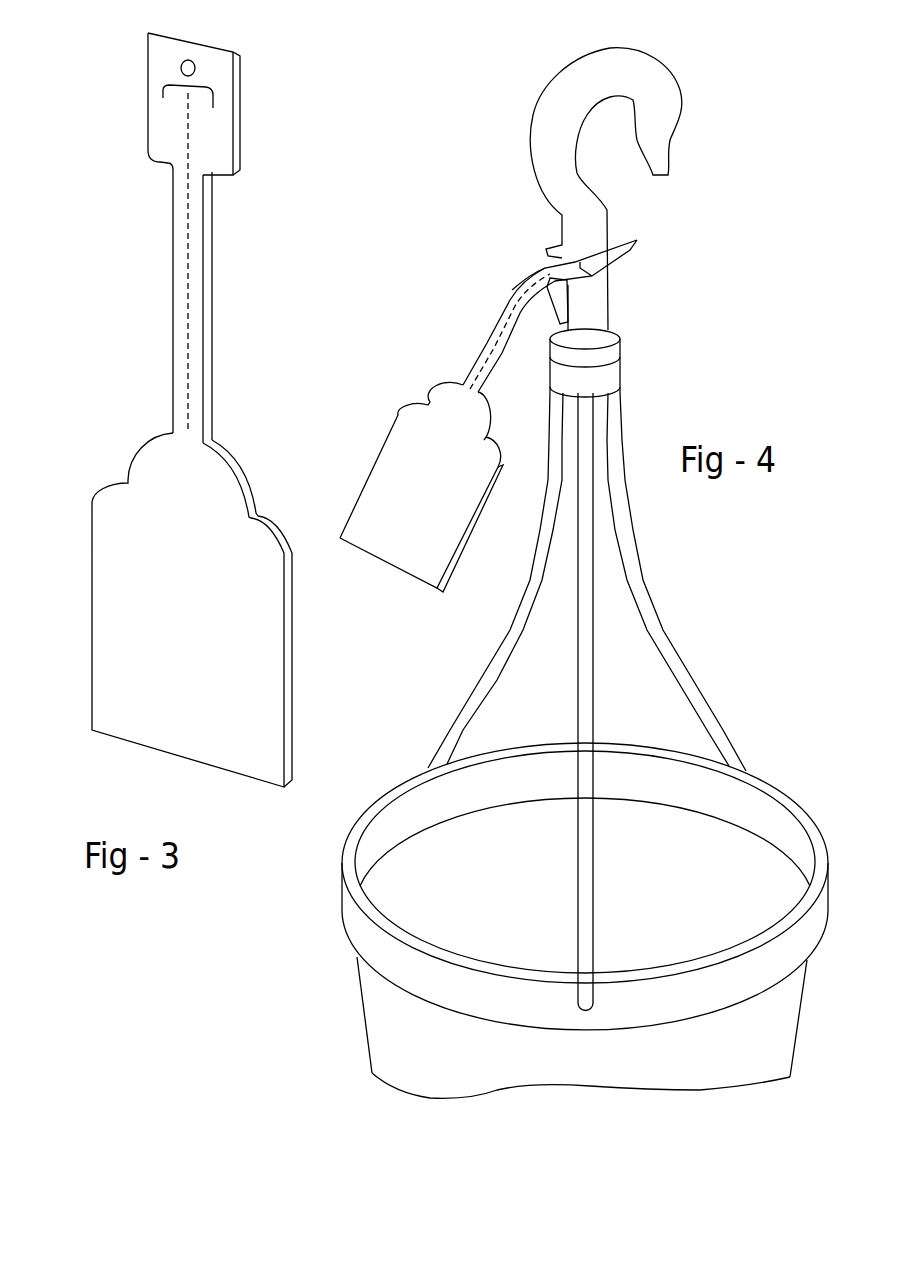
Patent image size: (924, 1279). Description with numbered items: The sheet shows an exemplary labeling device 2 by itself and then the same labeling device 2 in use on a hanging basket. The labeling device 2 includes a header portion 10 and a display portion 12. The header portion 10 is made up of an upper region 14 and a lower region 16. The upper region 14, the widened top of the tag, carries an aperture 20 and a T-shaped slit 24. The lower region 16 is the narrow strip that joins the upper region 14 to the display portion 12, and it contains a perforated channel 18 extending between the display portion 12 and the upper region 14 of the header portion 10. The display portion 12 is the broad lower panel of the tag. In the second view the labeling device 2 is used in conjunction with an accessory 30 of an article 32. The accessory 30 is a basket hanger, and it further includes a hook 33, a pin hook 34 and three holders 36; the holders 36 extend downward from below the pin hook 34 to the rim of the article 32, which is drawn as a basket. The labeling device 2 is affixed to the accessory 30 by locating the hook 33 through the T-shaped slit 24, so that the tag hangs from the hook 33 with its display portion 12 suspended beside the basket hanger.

In FIG. 3, the labeling device 2 is at (176, 396).
In FIG. 4, the labeling device 2 is at (520, 396).
In FIG. 3, the header portion 10 is at (205, 238).
In FIG. 3, the display portion 12 is at (70, 424).
In FIG. 3, the upper region 14 is at (205, 105).
In FIG. 3, the lower region 16 is at (214, 268).
In FIG. 3, the perforated channel 18 is at (182, 315).
In FIG. 3, the aperture 20 is at (172, 64).
In FIG. 3, the T-shaped slit 24 is at (178, 127).
In FIG. 4, the T-shaped slit 24 is at (618, 229).
In FIG. 4, the accessory 30 is at (585, 569).
In FIG. 4, the article 32 is at (787, 785).
In FIG. 4, the hook 33 is at (688, 74).
In FIG. 4, the pin hook 34 is at (580, 309).
In FIG. 4, the holders 36 is at (524, 664).